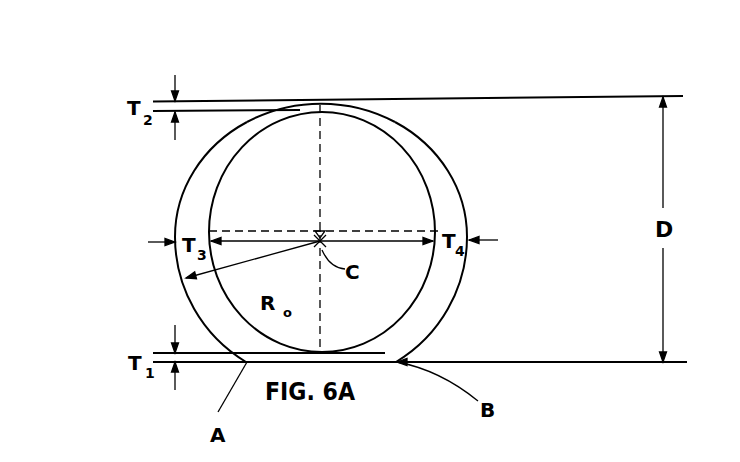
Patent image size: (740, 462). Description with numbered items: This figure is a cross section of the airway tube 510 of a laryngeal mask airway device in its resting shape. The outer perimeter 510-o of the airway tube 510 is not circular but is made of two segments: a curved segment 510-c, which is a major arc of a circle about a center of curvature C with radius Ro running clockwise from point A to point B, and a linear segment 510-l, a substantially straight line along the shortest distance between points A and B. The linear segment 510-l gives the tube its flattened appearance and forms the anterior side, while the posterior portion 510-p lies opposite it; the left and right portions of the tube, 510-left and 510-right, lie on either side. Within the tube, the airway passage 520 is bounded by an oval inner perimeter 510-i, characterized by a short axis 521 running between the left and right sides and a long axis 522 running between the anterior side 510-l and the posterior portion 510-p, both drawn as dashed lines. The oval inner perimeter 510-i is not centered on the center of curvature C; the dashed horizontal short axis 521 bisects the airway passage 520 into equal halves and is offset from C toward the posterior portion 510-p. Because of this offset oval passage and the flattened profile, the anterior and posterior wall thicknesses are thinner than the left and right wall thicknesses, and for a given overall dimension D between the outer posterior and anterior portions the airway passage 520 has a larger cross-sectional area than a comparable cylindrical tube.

The airway tube 510 is at (321, 236).
The posterior portion 510-p is at (320, 98).
The outer perimeter 510-o is at (321, 236).
The inner perimeter 510-i is at (387, 137).
The curved segment 510-c is at (177, 205).
The left portion 510-left is at (176, 255).
The right portion 510-right is at (462, 252).
The linear segment 510-l is at (384, 366).
The airway passage 520 is at (324, 228).
The short axis 521 is at (237, 231).
The long axis 522 is at (322, 333).